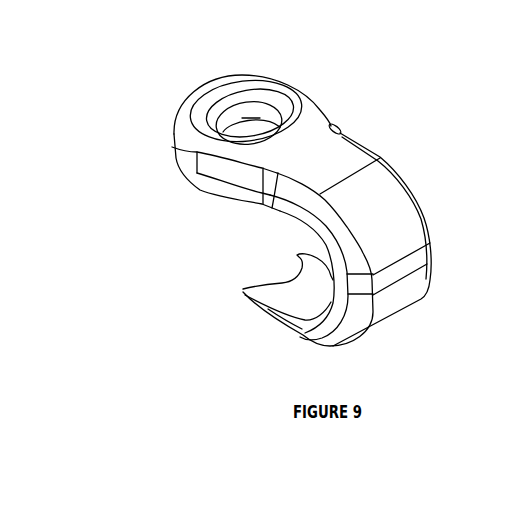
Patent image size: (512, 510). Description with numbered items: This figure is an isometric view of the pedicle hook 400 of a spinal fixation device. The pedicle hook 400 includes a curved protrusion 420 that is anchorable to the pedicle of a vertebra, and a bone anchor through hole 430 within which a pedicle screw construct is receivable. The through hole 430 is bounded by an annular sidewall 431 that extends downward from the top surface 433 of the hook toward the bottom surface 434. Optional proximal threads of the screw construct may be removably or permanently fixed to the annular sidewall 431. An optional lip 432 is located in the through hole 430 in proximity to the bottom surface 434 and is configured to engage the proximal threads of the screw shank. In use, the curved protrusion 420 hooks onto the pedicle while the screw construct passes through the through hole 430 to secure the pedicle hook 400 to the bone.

The pedicle hook 400 is at (138, 118).
The curved protrusion 420 is at (405, 265).
The bone anchor through hole 430 is at (234, 135).
The annular sidewall 431 is at (247, 104).
The lip 432 is at (276, 118).
The top surface 433 is at (216, 94).
The bottom surface 434 is at (208, 189).